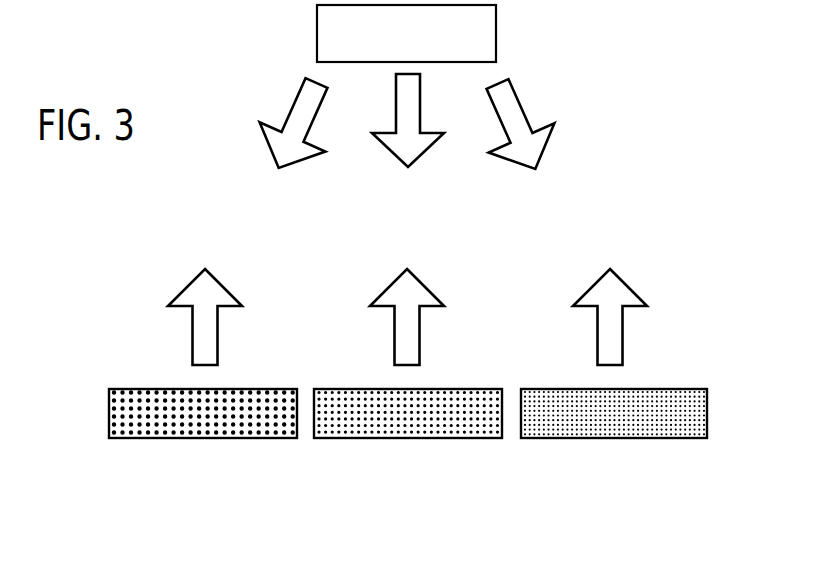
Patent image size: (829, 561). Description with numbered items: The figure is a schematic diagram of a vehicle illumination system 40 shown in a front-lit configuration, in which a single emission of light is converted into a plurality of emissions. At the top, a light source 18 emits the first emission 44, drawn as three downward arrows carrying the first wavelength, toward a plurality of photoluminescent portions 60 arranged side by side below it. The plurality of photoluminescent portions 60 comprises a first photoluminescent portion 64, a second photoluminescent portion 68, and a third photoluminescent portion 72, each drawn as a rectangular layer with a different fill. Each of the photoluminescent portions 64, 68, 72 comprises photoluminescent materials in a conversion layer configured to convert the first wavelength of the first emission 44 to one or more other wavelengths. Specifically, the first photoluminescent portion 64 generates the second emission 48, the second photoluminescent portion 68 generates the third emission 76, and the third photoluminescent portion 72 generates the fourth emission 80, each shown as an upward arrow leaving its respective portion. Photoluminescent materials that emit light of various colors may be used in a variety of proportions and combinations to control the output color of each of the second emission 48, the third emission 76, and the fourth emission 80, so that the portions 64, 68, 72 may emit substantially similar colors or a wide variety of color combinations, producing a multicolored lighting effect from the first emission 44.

The illumination system 40 is at (677, 77).
The light source 18 is at (422, 40).
The first emission 44 is at (317, 110).
The second emission 48 is at (190, 288).
The third emission 76 is at (397, 289).
The fourth emission 80 is at (597, 289).
The plurality of photoluminescent portions 60 is at (572, 417).
The first photoluminescent portion 64 is at (135, 389).
The second photoluminescent portion 68 is at (372, 397).
The third photoluminescent portion 72 is at (569, 393).